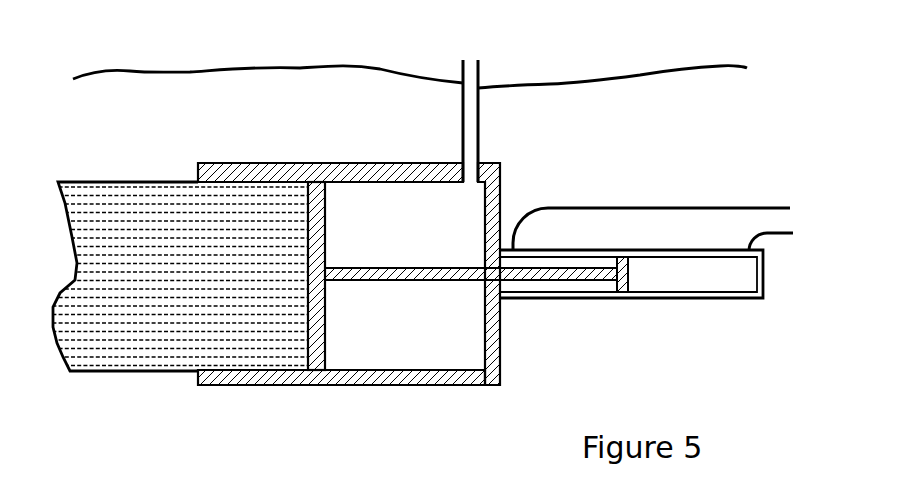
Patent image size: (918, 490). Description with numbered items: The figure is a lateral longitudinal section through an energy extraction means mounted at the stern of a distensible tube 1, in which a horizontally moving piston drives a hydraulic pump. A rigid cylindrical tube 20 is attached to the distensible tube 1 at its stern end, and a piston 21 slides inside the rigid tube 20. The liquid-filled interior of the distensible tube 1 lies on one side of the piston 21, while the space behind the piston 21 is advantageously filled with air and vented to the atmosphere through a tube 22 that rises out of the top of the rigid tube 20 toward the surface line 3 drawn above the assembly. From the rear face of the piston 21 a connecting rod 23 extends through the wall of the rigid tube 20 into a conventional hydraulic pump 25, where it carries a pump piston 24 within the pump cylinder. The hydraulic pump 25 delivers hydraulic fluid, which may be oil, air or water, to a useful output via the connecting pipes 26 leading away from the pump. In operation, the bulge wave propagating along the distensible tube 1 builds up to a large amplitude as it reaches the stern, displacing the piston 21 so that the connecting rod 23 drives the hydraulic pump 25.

The distensible tube 1 is at (92, 180).
The skin / surface line 3 is at (188, 72).
The rigid cylindrical tube 20 is at (260, 163).
The piston 21 is at (325, 243).
The tube 22 is at (480, 123).
The connecting rod 23 is at (388, 283).
The piston 24 is at (605, 302).
The hydraulic pump 25 is at (683, 300).
The connecting pipes 26 is at (772, 232).